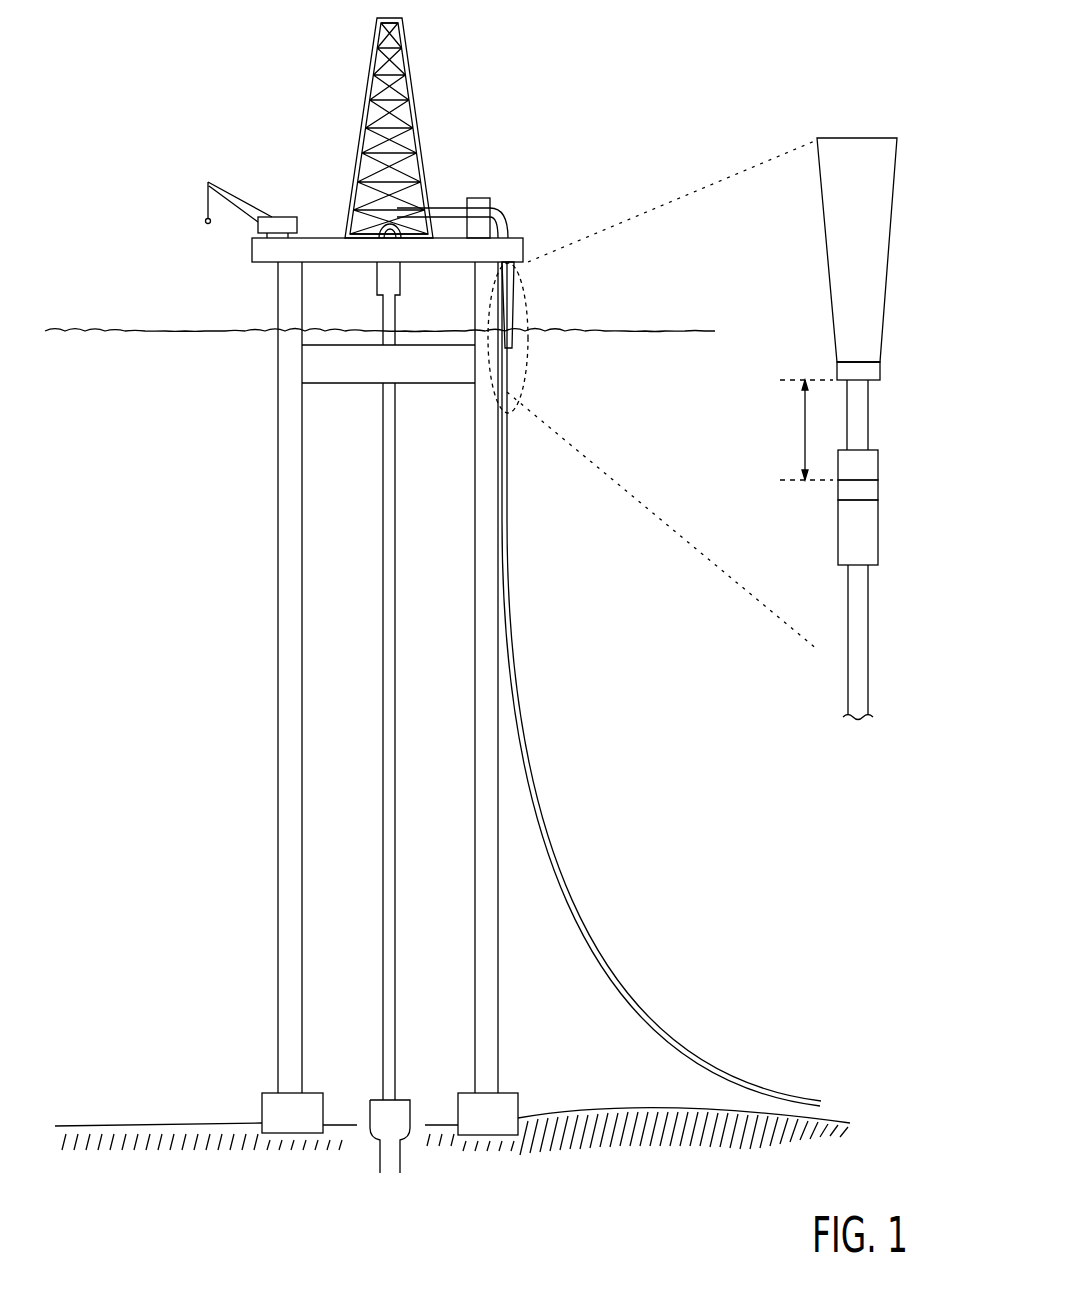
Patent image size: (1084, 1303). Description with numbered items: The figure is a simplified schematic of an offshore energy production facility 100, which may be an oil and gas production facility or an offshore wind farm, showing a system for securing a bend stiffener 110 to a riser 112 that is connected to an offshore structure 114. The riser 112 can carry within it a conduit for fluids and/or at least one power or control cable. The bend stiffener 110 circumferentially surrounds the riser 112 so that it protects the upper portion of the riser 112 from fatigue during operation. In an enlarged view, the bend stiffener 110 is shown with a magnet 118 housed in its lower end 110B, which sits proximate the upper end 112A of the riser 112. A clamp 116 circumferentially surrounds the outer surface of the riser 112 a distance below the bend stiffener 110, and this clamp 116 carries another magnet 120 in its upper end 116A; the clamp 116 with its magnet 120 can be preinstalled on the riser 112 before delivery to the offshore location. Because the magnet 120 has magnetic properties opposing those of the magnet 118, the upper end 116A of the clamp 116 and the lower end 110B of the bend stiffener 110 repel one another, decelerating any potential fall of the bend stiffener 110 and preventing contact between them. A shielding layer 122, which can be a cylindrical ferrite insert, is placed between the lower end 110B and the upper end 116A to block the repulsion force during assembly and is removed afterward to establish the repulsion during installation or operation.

The offshore energy production facility 100 is at (466, 98).
The bend stiffener 110 is at (888, 265).
The lower end of the bend stiffener 110B is at (816, 365).
The riser 112 is at (521, 790).
The upper end of the riser 112A is at (878, 421).
The offshore structure 114 is at (525, 232).
The clamp 116 is at (876, 540).
The upper end of the clamp 116A is at (886, 490).
The magnet 118 is at (862, 368).
The magnet 120 is at (840, 487).
The shielding layer 122 is at (878, 457).